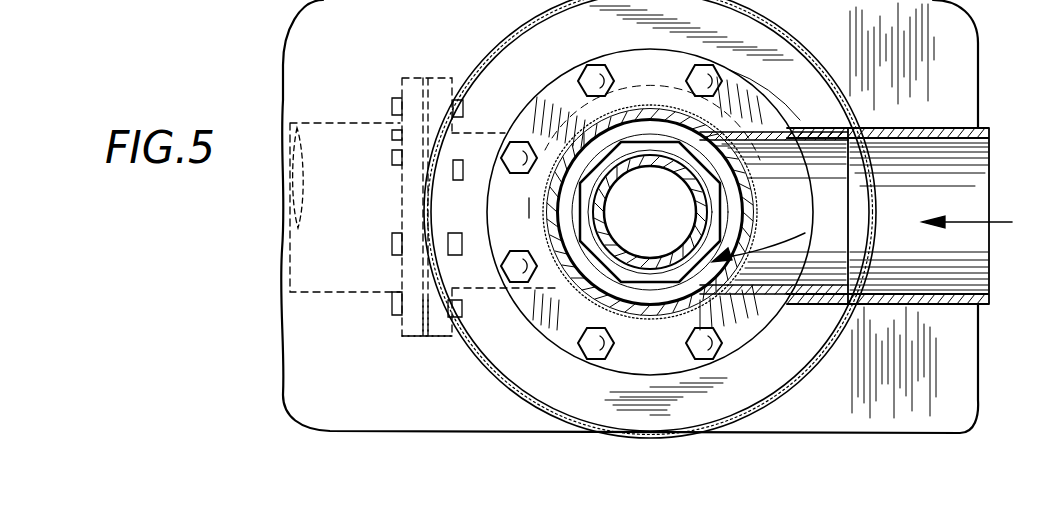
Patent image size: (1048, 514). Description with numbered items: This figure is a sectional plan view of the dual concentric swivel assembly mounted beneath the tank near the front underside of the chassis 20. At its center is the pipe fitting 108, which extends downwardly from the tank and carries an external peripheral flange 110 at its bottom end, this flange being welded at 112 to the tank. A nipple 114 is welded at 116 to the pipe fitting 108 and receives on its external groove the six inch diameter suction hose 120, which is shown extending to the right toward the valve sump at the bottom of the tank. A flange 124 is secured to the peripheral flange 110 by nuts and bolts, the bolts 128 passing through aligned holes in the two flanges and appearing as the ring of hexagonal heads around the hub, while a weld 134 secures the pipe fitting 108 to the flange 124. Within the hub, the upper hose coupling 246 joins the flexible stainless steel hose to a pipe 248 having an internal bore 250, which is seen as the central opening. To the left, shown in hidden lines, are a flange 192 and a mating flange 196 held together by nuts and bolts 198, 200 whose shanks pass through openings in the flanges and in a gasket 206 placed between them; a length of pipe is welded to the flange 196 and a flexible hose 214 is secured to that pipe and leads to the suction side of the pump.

The chassis 20 is at (943, 348).
The pipe fitting 108 is at (663, 113).
The external peripheral flange 110 is at (532, 37).
The weld 112 is at (481, 64).
The nipple 114 is at (770, 127).
The weld 116 is at (713, 297).
The suction hose 120 is at (961, 128).
The flange 124 is at (535, 325).
The bolts 128 is at (603, 44).
The weld 134 is at (624, 320).
The flange 192 is at (440, 342).
The flange 196 is at (403, 343).
The nuts 198 is at (462, 107).
The bolts 200 is at (392, 104).
The gasket 206 is at (427, 77).
The flexible hose 214 is at (327, 292).
The upper hose coupling 246 is at (578, 202).
The pipe 248 is at (657, 162).
The internal bore 250 is at (657, 263).